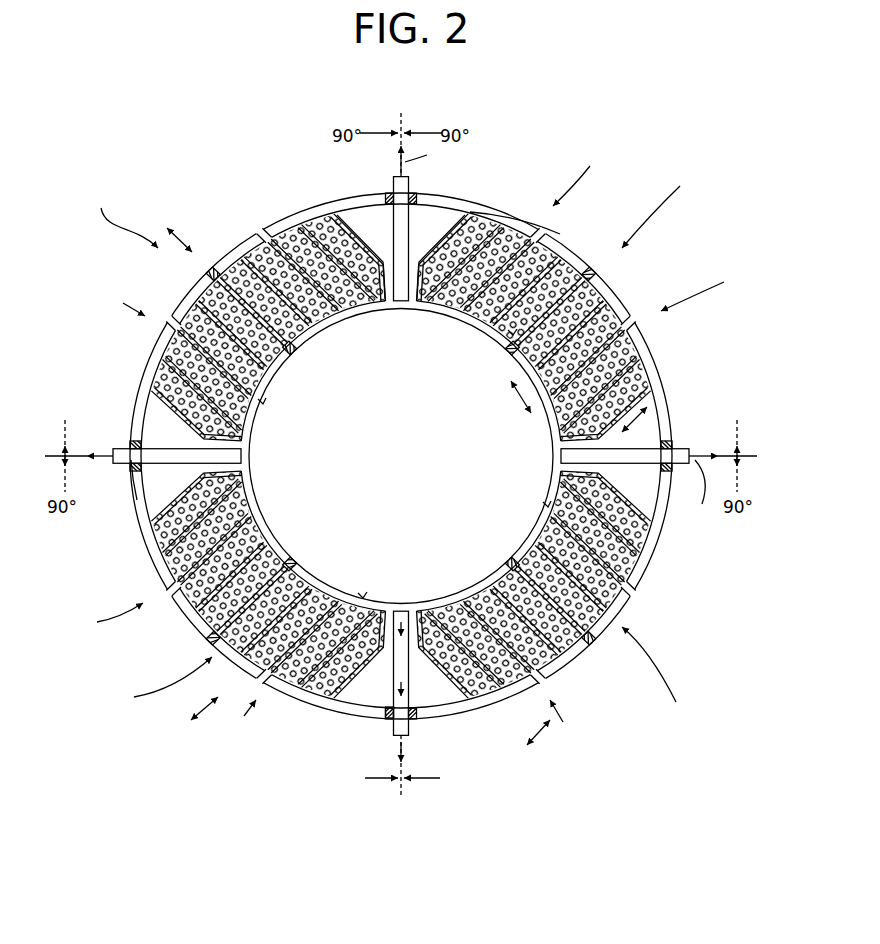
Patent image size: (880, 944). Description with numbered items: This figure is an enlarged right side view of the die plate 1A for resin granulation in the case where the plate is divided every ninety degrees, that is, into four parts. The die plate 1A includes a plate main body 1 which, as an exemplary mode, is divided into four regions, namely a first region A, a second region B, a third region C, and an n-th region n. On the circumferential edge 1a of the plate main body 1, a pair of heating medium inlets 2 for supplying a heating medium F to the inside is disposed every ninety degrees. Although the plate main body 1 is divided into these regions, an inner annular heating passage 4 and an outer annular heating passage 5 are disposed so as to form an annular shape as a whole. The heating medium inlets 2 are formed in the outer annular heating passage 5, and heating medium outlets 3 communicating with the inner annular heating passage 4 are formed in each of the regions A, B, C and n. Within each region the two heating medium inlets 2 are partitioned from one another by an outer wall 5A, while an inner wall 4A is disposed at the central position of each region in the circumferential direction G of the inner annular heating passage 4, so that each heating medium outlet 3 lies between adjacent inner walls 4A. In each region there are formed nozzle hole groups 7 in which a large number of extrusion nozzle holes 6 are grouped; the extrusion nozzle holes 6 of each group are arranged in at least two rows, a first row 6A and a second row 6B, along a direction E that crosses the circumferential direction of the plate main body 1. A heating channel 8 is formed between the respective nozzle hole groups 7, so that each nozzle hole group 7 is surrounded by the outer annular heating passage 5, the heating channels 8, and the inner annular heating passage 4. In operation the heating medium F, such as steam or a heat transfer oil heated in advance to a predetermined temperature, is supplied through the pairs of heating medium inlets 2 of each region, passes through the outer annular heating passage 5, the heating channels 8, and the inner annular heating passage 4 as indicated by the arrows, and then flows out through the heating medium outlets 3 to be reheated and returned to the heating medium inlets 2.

The plate main body 1 is at (617, 284).
The die plate 1A is at (588, 240).
The circumferential edge 1a is at (140, 516).
The heating medium inlets 2 is at (266, 226).
The heating medium outlets 3 is at (411, 188).
The inner annular heating passage 4 is at (339, 585).
The inner wall 4A is at (530, 340).
The outer annular heating passage 5 is at (350, 712).
The outer wall 5A is at (388, 198).
The extrusion nozzle holes 6 is at (590, 241).
The first row 6A is at (387, 306).
The second row 6B is at (415, 306).
The nozzle hole groups 7 is at (512, 332).
The heating channel 8 is at (533, 227).
The n-th region n is at (124, 217).
The direction crossing the circumferential direction E is at (408, 487).
The heating medium F is at (412, 388).
The circumferential direction G is at (519, 396).
The first region A is at (656, 206).
The second region B is at (657, 675).
The third region C is at (163, 684).